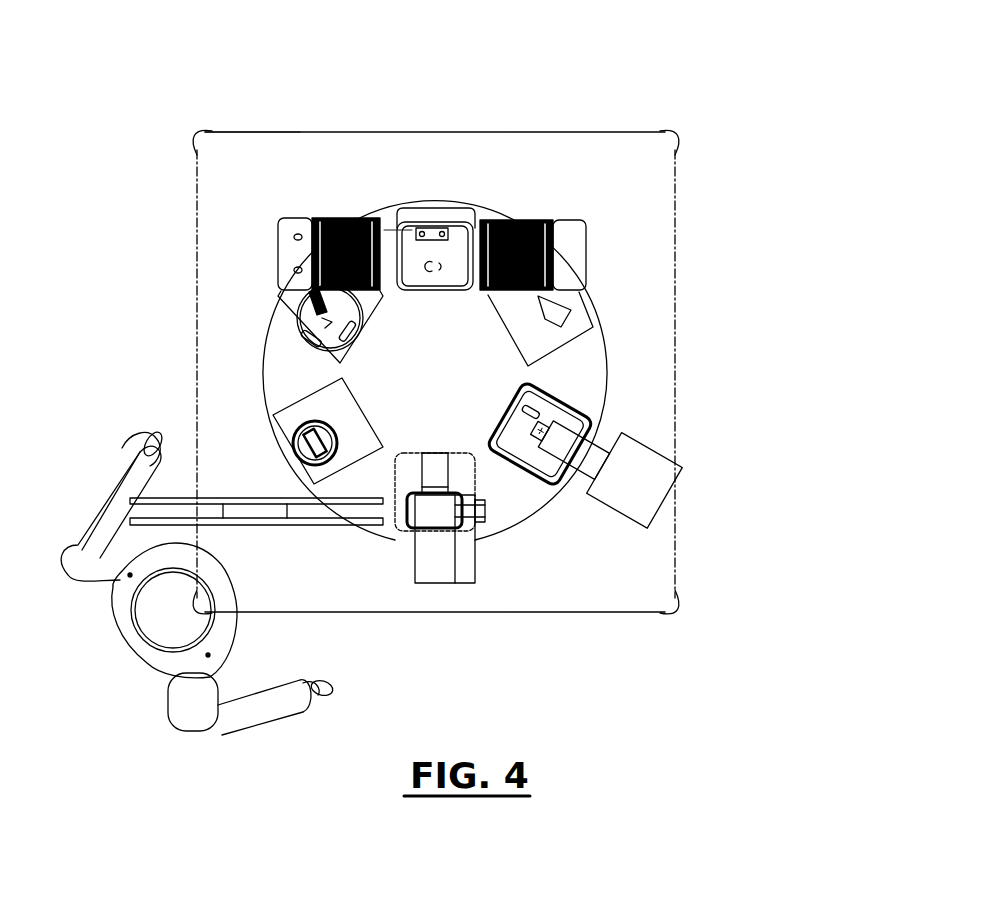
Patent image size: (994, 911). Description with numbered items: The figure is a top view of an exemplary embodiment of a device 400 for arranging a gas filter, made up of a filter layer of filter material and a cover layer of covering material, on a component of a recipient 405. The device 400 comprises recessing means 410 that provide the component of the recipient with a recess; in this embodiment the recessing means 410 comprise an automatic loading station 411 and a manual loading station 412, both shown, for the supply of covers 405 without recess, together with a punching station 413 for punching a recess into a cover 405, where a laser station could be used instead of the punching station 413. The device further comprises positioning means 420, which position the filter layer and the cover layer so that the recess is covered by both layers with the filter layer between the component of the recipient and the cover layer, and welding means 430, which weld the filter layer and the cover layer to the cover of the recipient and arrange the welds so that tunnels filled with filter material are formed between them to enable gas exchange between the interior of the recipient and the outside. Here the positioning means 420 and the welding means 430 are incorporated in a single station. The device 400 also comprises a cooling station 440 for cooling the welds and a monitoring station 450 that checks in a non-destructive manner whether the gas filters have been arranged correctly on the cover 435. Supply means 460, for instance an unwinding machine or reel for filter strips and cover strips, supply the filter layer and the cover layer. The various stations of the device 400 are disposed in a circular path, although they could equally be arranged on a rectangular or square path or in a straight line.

The device 400 is at (296, 160).
The recessing means 410 is at (503, 164).
The automatic loading station 411 is at (462, 212).
The cover 435 is at (300, 237).
The recipient 405 is at (565, 237).
The manual loading station 412 is at (585, 284).
The monitoring station 450 is at (314, 303).
The cooling station 440 is at (312, 420).
The punching station 413 is at (618, 449).
The positioning means 420 is at (501, 574).
The welding means 430 is at (435, 492).
The supply means 460 is at (300, 526).